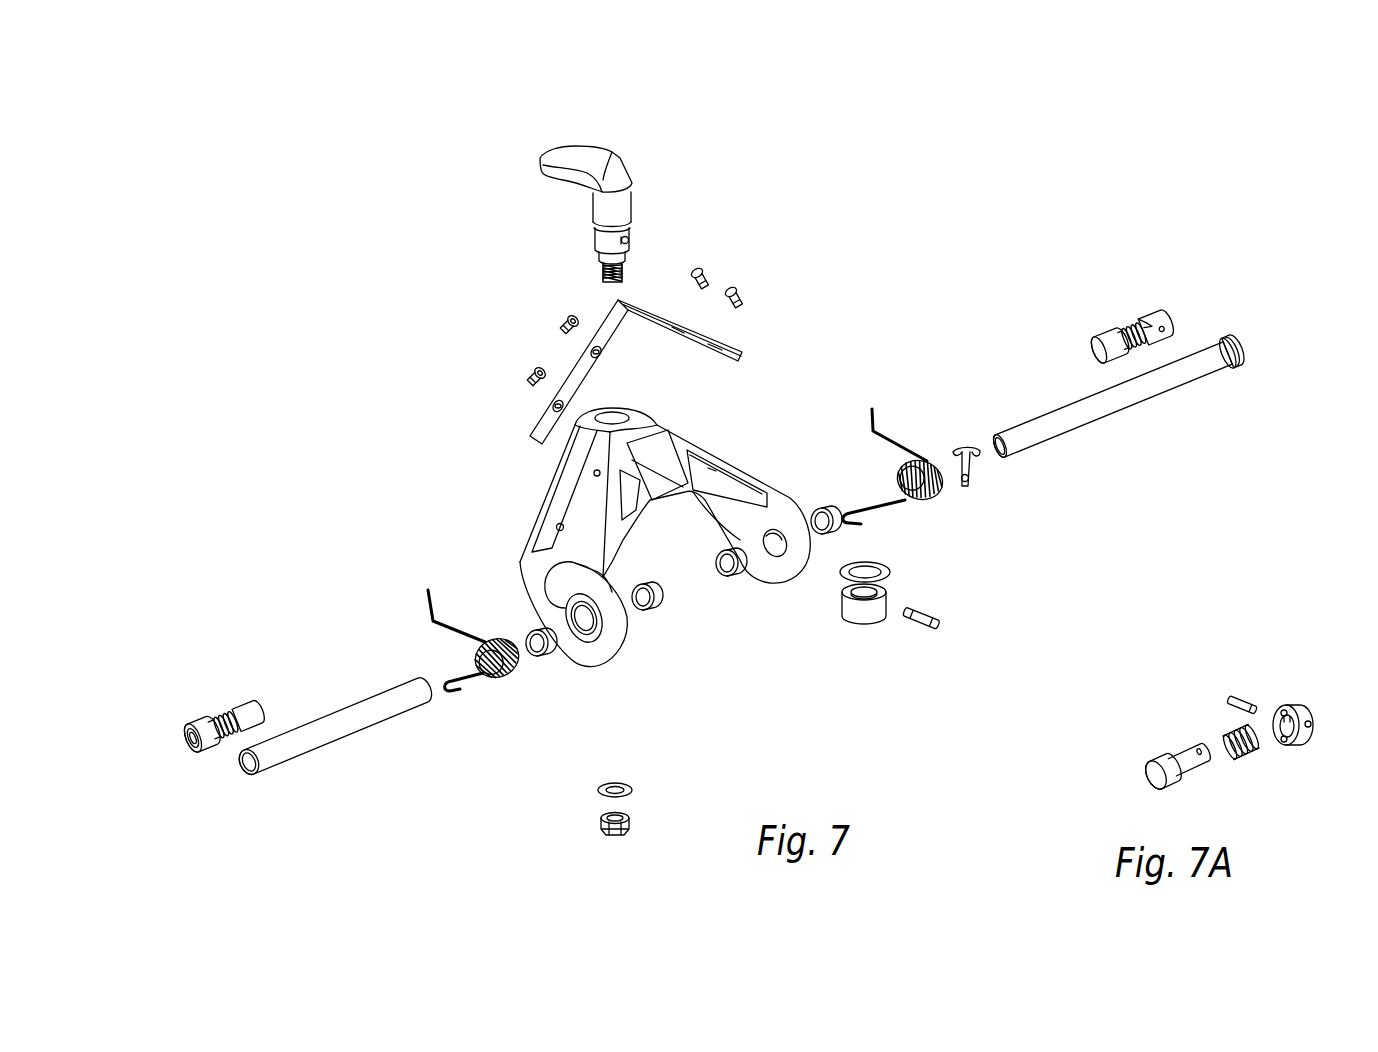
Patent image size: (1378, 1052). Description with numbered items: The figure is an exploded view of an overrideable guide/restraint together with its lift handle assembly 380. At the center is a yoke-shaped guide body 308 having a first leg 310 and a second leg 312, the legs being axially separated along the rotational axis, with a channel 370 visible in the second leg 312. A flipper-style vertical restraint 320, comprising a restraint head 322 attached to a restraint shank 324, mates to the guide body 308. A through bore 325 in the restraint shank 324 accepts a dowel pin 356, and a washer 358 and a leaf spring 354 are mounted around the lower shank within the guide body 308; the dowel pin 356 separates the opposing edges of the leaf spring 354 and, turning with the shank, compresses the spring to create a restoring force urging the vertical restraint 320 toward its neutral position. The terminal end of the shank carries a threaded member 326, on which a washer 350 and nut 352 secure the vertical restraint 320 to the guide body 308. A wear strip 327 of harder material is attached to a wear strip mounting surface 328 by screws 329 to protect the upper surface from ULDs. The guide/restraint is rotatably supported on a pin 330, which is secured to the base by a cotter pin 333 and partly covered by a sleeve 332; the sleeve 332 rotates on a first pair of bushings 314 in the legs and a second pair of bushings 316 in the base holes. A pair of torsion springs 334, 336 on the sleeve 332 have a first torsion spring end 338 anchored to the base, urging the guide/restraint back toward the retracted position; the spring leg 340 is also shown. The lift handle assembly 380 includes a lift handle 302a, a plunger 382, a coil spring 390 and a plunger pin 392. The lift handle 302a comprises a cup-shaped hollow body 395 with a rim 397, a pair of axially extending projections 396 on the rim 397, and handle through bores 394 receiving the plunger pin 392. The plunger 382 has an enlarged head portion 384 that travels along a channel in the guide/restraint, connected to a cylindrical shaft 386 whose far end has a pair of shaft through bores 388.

In FIG. 7A, the lift handle 302a is at (1311, 717).
In FIG. 7, the guide body 308 is at (674, 417).
In FIG. 7, the first leg 310 is at (794, 491).
In FIG. 7, the second leg 312 is at (524, 592).
In FIG. 7, the first pair of bushings 314 is at (657, 612).
In FIG. 7, the second pair of bushings 316 is at (536, 660).
In FIG. 7, the flipper-style vertical restraint 320 is at (550, 140).
In FIG. 7, the restraint head 322 is at (605, 181).
In FIG. 7, the restraint shank 324 is at (635, 207).
In FIG. 7, the through bore 325 is at (630, 241).
In FIG. 7, the threaded member 326 is at (601, 274).
In FIG. 7, the wear strip 327 is at (541, 408).
In FIG. 7, the wear strip mounting surface 328 is at (570, 510).
In FIG. 7, the screws 329 is at (557, 331).
In FIG. 7, the pin 330 is at (1105, 425).
In FIG. 7, the sleeve 332 is at (343, 740).
In FIG. 7, the cotter pin 333 is at (965, 480).
In FIG. 7, the torsion spring 334 is at (510, 680).
In FIG. 7, the torsion spring 336 is at (916, 462).
In FIG. 7, the first torsion spring end 338 is at (447, 695).
In FIG. 7, the spring leg 340 is at (427, 598).
In FIG. 7, the washer 350 is at (633, 790).
In FIG. 7, the nut 352 is at (631, 822).
In FIG. 7, the leaf spring 354 is at (858, 621).
In FIG. 7, the dowel pin 356 is at (942, 623).
In FIG. 7, the washer 358 is at (842, 574).
In FIG. 7, the channel 370 is at (570, 578).
In FIG. 7, the lift handle assembly 380 is at (232, 700).
In FIG. 7A, the lift handle assembly 380 is at (1115, 672).
In FIG. 7A, the plunger 382 is at (1116, 740).
In FIG. 7A, the head portion 384 is at (1147, 762).
In FIG. 7A, the cylindrical shaft 386 is at (1182, 754).
In FIG. 7A, the shaft through bores 388 is at (1206, 757).
In FIG. 7A, the coil spring 390 is at (1230, 738).
In FIG. 7A, the plunger pin 392 is at (1248, 705).
In FIG. 7A, the handle through bores 394 is at (1305, 746).
In FIG. 7A, the cup-shaped hollow body 395 is at (1296, 720).
In FIG. 7A, the axially extending projections 396 is at (1284, 710).
In FIG. 7A, the rim 397 is at (1286, 745).